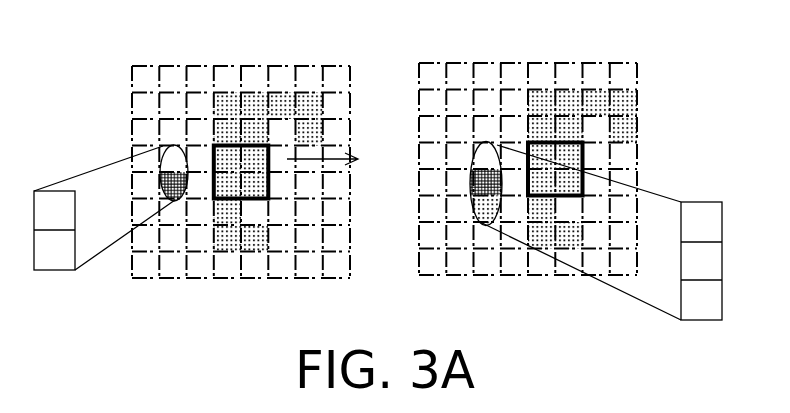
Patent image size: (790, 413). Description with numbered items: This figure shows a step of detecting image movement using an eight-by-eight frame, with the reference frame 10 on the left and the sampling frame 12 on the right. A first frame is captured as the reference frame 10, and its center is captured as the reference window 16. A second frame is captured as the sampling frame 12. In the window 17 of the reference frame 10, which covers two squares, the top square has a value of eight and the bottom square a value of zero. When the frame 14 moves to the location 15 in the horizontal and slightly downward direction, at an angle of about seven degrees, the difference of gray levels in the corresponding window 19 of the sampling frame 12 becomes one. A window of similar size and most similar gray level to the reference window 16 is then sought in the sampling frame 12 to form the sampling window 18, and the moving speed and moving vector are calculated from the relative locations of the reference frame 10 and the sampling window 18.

The reference frame 10 is at (247, 65).
The sampling frame 12 is at (537, 62).
The frame 14 is at (320, 107).
The location 15 is at (330, 158).
The reference window 16 is at (268, 180).
The window 17 is at (55, 270).
The sampling window 18 is at (553, 167).
The window 19 is at (702, 202).